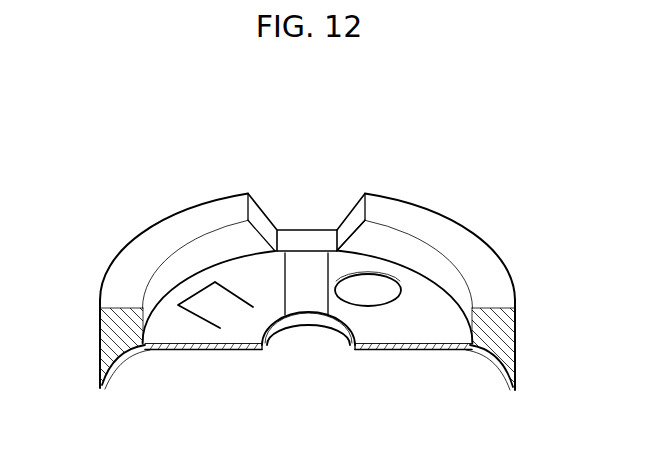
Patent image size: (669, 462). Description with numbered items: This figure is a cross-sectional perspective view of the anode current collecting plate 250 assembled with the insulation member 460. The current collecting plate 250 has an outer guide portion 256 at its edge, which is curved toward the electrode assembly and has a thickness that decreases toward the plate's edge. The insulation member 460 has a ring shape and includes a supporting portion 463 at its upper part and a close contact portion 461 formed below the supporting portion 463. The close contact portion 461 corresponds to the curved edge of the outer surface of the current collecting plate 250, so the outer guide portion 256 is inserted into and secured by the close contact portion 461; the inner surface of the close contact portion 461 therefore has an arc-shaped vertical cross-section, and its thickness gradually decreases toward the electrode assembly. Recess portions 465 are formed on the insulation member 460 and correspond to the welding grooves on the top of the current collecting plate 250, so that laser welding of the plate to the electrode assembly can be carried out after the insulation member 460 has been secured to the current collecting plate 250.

The anode current collecting plate 250 is at (240, 358).
The outer guide portion 256 is at (116, 372).
The insulation member 460 is at (492, 246).
The close contact portion 461 is at (100, 365).
The supporting portion 463 is at (184, 257).
The recess portions 465 is at (350, 222).